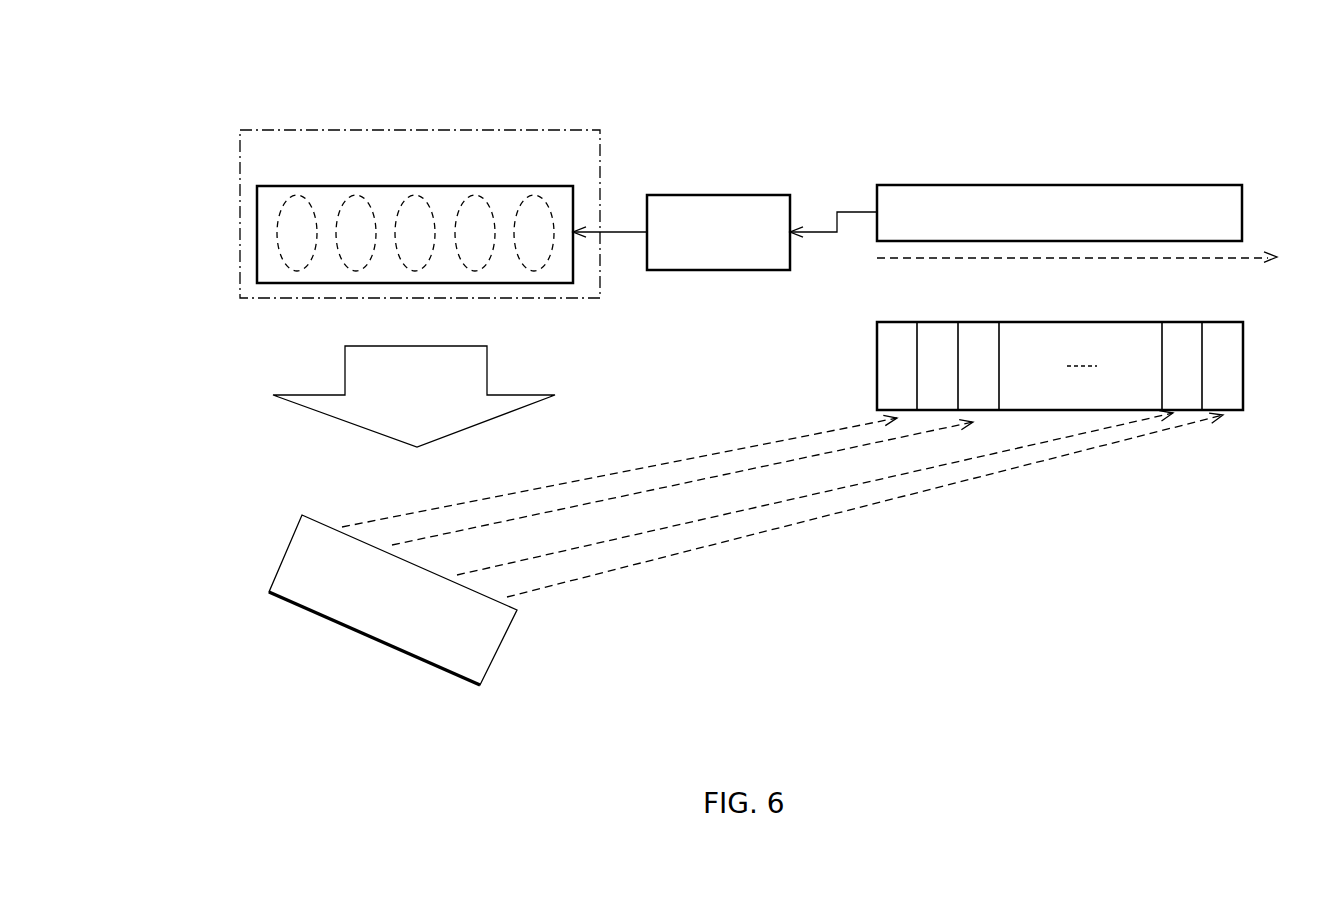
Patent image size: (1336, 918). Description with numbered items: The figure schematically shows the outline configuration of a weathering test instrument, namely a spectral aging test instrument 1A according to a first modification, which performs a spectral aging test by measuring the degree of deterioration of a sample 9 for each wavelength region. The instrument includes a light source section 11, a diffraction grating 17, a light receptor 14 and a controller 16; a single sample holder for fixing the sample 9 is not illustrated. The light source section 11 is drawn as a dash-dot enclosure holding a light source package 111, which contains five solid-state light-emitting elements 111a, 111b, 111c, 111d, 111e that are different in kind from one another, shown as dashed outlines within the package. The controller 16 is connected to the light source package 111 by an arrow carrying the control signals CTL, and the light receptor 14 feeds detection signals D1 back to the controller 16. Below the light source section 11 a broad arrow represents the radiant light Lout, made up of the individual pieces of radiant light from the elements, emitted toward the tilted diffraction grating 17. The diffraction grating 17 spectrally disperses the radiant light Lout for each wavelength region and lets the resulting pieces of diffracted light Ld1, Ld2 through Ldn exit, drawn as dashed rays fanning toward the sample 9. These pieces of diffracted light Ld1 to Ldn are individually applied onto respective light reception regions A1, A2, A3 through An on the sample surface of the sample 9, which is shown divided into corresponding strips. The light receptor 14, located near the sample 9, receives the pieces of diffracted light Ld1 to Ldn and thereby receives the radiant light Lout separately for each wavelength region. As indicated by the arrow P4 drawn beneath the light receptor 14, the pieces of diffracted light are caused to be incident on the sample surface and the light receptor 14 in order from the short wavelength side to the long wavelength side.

The spectral aging test instrument 1A is at (1158, 97).
The sample 9 is at (1250, 322).
The light source section 11 is at (413, 130).
The light receptor 14 is at (1242, 213).
The controller 16 is at (718, 195).
The diffraction grating 17 is at (367, 632).
The light source package 111 is at (257, 238).
The solid-state light-emitting element 111a is at (296, 194).
The solid-state light-emitting element 111b is at (355, 194).
The solid-state light-emitting element 111c is at (414, 194).
The solid-state light-emitting element 111d is at (474, 194).
The solid-state light-emitting element 111e is at (533, 194).
The control signal CTL is at (622, 232).
The detection signal D1 is at (845, 212).
The arrow P4 is at (1233, 265).
The light reception region A1 is at (897, 326).
The light reception region A2 is at (937, 326).
The light reception region A3 is at (978, 326).
The light reception region An is at (1227, 326).
The radiant light Lout is at (414, 396).
The diffracted light Ld1 is at (628, 470).
The diffracted light Ld2 is at (716, 476).
The diffracted light Ldn is at (808, 497).